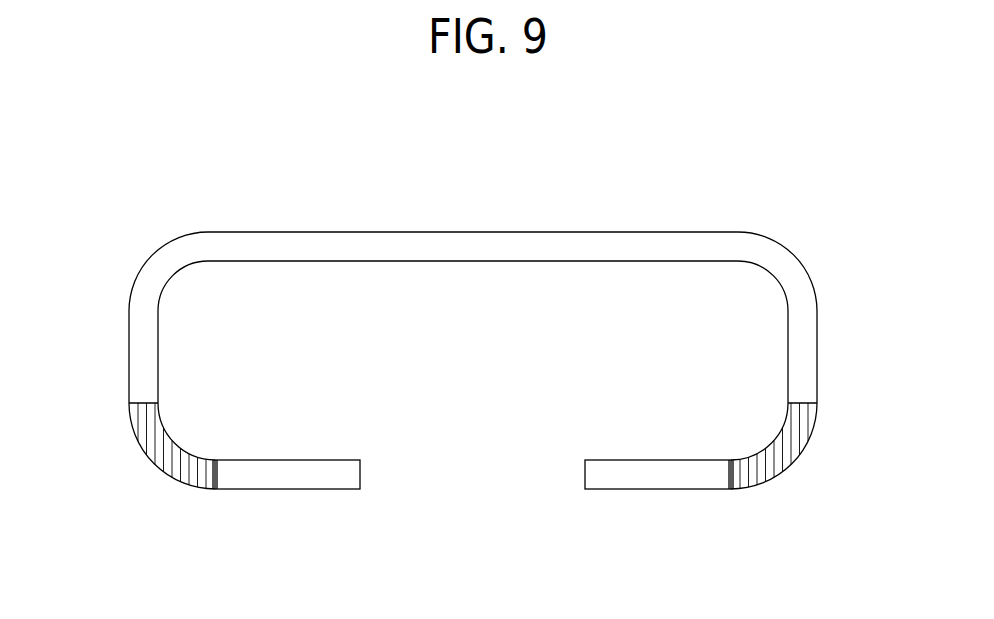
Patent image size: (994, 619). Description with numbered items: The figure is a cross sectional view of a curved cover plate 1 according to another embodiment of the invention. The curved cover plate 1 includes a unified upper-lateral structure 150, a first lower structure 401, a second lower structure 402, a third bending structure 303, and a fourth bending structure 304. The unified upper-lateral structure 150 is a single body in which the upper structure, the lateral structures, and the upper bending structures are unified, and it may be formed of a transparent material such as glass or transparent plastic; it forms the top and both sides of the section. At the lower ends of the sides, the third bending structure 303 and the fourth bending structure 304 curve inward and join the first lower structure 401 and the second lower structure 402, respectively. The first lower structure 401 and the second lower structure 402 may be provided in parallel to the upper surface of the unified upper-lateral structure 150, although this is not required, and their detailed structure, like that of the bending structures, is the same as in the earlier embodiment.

The curved cover plate 1 is at (784, 192).
The unified upper-lateral structure 150 is at (469, 243).
The third bending structure 303 is at (790, 458).
The fourth bending structure 304 is at (160, 458).
The first lower structure 401 is at (659, 479).
The second lower structure 402 is at (285, 479).